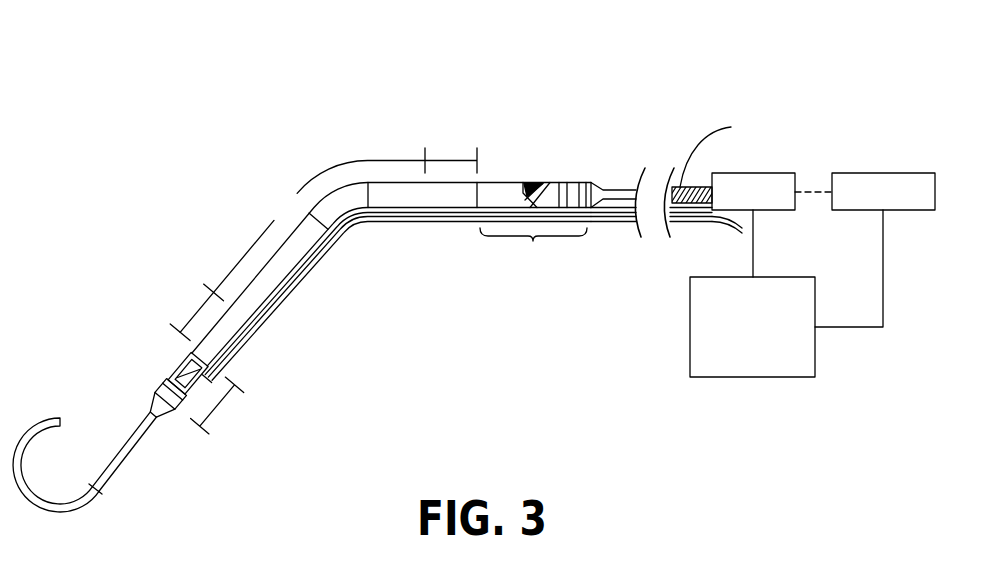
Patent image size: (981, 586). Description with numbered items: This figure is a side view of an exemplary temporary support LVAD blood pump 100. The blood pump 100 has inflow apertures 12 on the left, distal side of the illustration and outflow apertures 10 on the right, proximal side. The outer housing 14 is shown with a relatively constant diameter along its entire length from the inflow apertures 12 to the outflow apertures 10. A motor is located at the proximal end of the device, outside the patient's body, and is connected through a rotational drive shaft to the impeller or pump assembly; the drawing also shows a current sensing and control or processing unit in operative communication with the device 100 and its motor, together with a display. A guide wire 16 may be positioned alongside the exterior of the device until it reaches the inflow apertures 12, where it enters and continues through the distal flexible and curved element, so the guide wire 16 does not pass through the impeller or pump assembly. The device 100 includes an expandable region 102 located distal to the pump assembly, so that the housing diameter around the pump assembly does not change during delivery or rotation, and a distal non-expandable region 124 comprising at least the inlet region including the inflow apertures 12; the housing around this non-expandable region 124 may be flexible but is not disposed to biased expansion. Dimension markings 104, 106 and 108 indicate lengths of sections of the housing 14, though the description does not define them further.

The blood pump 100 is at (647, 74).
The expandable region 102 is at (388, 124).
The outflow apertures 10 is at (537, 181).
The inflow apertures 12 is at (190, 361).
The outer housing 14 is at (261, 304).
The guide wire 16 is at (605, 222).
The bent shaft section 104 is at (302, 246).
The proximal shaft section 106 is at (441, 160).
The distal shaft section 108 is at (188, 323).
The distal non-expandable region 124 is at (215, 408).